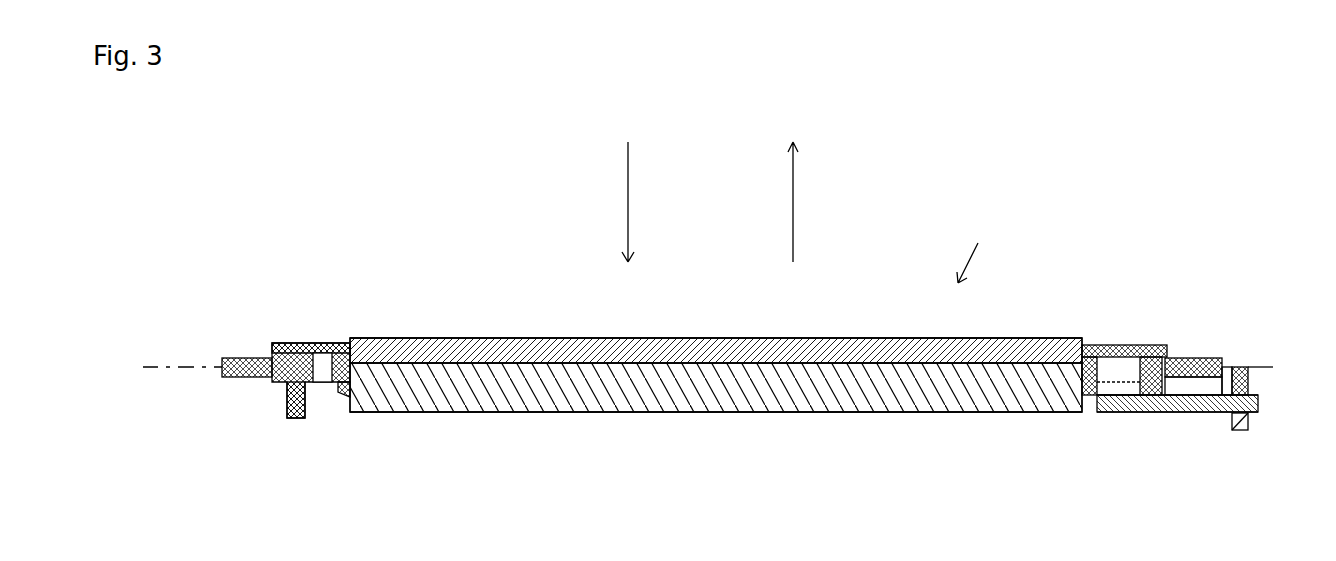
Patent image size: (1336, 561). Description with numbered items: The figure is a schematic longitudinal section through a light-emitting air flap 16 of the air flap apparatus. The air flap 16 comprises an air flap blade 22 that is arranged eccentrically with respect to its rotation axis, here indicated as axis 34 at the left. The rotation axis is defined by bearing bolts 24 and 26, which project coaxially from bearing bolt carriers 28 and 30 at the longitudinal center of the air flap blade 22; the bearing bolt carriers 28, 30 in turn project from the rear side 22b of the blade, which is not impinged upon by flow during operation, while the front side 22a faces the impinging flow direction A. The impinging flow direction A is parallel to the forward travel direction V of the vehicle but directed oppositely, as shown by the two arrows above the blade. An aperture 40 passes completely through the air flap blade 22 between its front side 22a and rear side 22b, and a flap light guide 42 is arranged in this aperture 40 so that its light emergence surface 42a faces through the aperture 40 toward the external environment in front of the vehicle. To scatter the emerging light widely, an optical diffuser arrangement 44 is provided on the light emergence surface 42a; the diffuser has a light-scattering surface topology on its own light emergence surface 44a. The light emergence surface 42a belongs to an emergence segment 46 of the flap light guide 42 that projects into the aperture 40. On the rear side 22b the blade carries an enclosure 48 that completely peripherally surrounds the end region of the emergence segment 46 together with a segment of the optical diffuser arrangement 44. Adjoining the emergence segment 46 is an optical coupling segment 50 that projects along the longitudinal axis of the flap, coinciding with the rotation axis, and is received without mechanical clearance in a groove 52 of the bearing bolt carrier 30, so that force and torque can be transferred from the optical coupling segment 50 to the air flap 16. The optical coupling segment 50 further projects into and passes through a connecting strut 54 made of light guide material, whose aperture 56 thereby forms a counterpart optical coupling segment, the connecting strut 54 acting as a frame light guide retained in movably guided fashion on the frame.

The air flap 16 is at (966, 234).
The air flap blade 22 is at (325, 345).
The front side 22a is at (312, 345).
The rear side 22b is at (320, 360).
The bearing bolt 24 is at (233, 365).
The bearing bolt 26 is at (1197, 358).
The bearing bolt carrier 28 is at (287, 400).
The bearing bolt carrier 30 is at (1157, 412).
The axis 34 is at (152, 364).
The aperture 40 is at (705, 445).
The flap light guide 42 is at (646, 426).
The light emergence surface 42a is at (478, 362).
The optical diffuser arrangement 44 is at (730, 347).
The light emergence surface 44a is at (847, 331).
The emergence segment 46 is at (580, 393).
The enclosure 48 is at (345, 395).
The optical coupling segment 50 is at (1190, 412).
The groove 52 is at (1148, 412).
The connecting strut 54 is at (1242, 376).
The aperture 56 is at (1252, 406).
The impinging flow direction A is at (631, 190).
The forward travel direction V is at (796, 178).